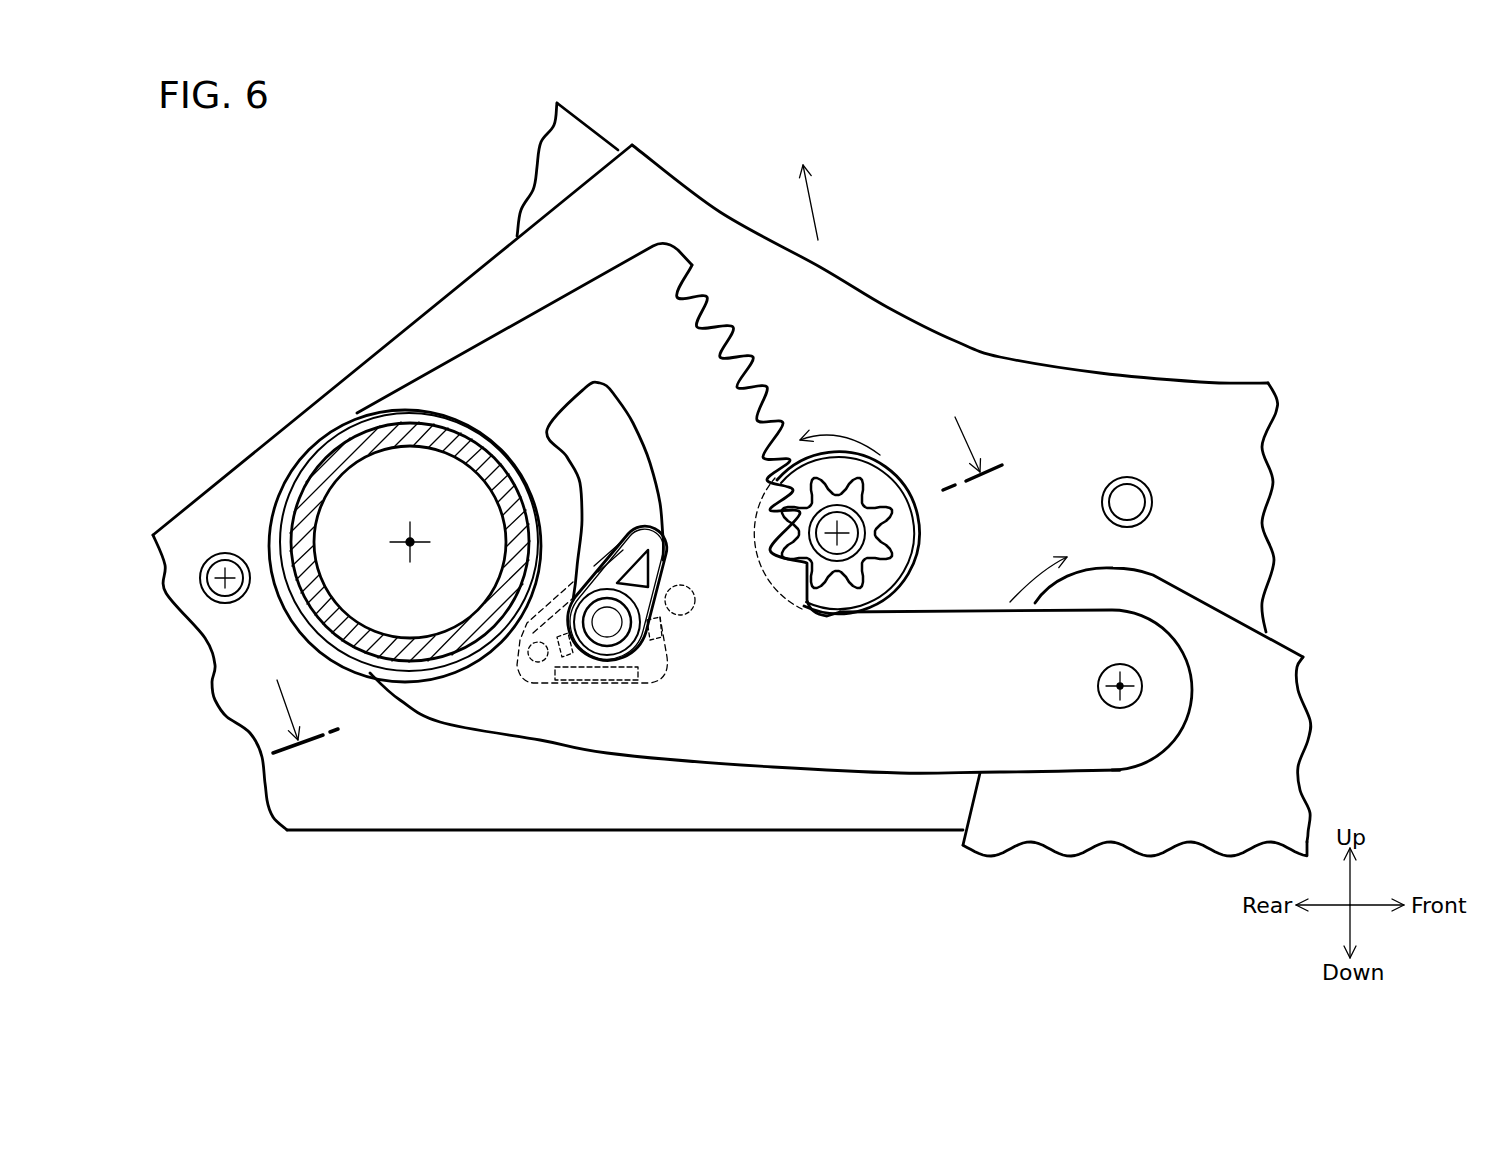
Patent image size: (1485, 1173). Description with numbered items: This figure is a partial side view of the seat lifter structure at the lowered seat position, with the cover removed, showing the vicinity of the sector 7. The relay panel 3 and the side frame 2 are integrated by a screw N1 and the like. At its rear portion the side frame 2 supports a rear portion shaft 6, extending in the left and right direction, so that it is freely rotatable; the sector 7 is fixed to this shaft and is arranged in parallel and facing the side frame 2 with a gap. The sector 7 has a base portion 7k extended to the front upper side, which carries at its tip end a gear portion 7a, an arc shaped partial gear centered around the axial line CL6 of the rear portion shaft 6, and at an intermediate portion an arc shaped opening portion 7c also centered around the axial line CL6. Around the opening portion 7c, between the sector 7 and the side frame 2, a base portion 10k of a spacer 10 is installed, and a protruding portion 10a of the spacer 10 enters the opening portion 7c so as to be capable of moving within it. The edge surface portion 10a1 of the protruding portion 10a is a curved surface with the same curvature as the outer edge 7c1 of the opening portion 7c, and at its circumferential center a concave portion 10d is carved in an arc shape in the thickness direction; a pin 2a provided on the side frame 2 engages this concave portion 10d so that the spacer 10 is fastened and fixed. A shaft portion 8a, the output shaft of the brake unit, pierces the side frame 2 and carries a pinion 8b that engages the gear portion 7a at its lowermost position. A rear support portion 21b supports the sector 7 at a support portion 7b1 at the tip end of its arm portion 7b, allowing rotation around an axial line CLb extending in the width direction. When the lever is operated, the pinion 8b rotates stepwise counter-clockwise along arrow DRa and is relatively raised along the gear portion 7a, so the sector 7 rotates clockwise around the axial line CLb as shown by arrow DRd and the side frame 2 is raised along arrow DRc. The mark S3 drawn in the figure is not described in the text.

The side frame 2 is at (1000, 368).
The pin 2a is at (695, 872).
The relay panel 3 is at (583, 130).
The rear portion shaft 6 is at (517, 597).
The sector 7 is at (830, 581).
The gear portion 7a is at (784, 398).
The arm portion 7b is at (888, 745).
The support portion 7b1 is at (1150, 684).
The opening portion 7c is at (580, 468).
The outer edge 7c1 is at (625, 445).
The base portion 7k is at (607, 725).
The shaft portion 8a is at (863, 547).
The pinion 8b is at (890, 512).
The spacer 10 is at (586, 681).
The protruding portion 10a is at (593, 547).
The edge surface portion 10a1 is at (673, 660).
The concave portion 10d is at (690, 850).
The base portion 10k is at (583, 577).
The rear support portion 21b is at (1213, 603).
The screw N1 is at (207, 581).
The axial line CL6 is at (413, 552).
The axial line CLb is at (1125, 692).
The section line S3 is at (623, 583).
The arrow Dra DRa is at (840, 431).
The arrow DRc is at (836, 202).
The arrow DRd is at (1036, 565).